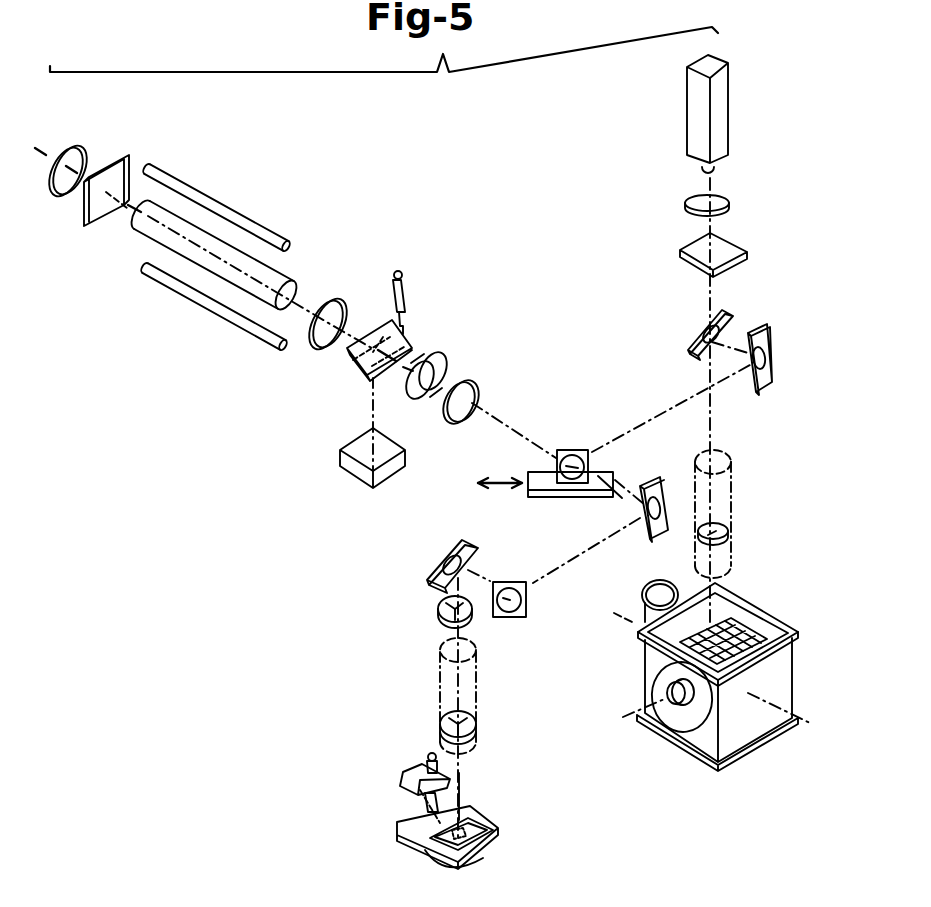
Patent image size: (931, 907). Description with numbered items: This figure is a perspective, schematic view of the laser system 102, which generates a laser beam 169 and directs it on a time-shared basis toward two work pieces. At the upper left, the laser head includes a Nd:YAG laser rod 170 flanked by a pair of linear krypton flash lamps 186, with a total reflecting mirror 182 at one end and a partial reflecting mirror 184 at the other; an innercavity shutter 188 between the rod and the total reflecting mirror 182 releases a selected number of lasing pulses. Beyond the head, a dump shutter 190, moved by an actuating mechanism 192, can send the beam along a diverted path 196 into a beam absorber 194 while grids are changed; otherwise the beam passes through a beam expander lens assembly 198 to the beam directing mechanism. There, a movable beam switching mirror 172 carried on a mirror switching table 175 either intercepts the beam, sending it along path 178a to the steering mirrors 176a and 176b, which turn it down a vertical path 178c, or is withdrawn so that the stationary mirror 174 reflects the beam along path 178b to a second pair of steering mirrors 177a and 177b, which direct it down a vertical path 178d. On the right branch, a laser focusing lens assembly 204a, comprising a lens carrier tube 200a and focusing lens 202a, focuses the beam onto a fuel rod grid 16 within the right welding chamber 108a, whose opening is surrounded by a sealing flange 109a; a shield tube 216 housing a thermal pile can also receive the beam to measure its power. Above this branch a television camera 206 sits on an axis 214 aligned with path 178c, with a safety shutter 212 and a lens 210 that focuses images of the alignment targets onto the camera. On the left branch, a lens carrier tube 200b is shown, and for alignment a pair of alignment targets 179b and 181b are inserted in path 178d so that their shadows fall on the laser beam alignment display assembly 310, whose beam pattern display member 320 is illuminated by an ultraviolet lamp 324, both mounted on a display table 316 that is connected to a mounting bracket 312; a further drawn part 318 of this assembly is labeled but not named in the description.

The laser system 102 is at (178, 475).
The total reflecting mirror 182 is at (83, 154).
The innercavity shutter 188 is at (92, 228).
The linear krypton flash lamps 186 is at (232, 212).
The laser rod 170 is at (284, 283).
The partial reflecting mirror 184 is at (342, 300).
The laser beam 169 is at (312, 312).
The dump shutter 190 is at (407, 336).
The actuating mechanism 192 is at (407, 292).
The diverted path 196 is at (373, 403).
The beam absorber 194 is at (351, 472).
The beam expander lens assembly 198 is at (463, 425).
The beam switching mirror 172 is at (557, 465).
The mirror switching table 175 is at (538, 500).
The stationary mirror 174 is at (650, 482).
The television camera 206 is at (725, 122).
The lens 210 is at (725, 197).
The safety shutter 212 is at (735, 245).
The axis 214 is at (710, 288).
The steering mirror 176b is at (698, 330).
The steering mirror 176a is at (760, 334).
The path 178a is at (696, 391).
The vertical path 178c is at (710, 408).
The lens carrier tube 200a is at (733, 467).
The laser focusing lens assembly 204a is at (740, 480).
The focusing lens 202a is at (720, 528).
The shield tube 216 is at (646, 592).
The right welding chamber 108a is at (645, 668).
The fuel rod grid 16 is at (733, 630).
The sealing flange 109a is at (760, 612).
The steering mirror 177b is at (435, 563).
The steering mirror 177a is at (510, 582).
The path 178b is at (607, 537).
The alignment target 179b is at (438, 608).
The vertical path 178d is at (443, 645).
The lens carrier tube 200b is at (438, 686).
The alignment target 181b is at (440, 723).
The laser beam alignment display assembly 310 is at (374, 806).
The lamp 324 is at (450, 775).
The display table 316 is at (405, 830).
The beam pattern display member 320 is at (487, 822).
The mounting bracket 312 is at (475, 865).
The post 318 is at (468, 862).